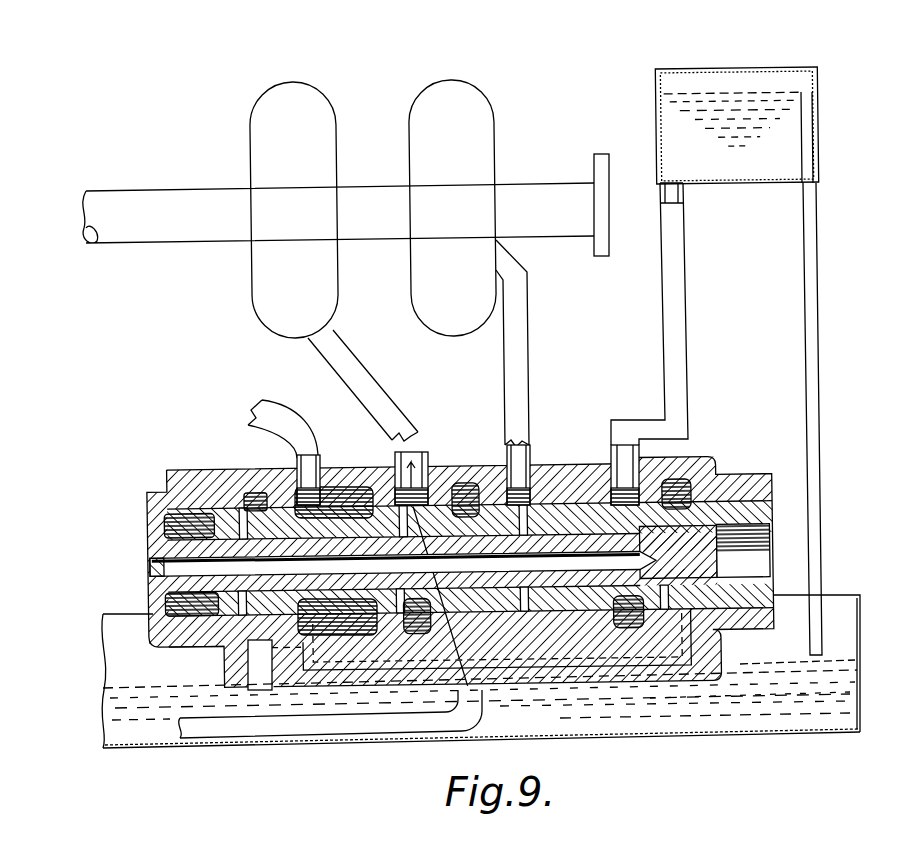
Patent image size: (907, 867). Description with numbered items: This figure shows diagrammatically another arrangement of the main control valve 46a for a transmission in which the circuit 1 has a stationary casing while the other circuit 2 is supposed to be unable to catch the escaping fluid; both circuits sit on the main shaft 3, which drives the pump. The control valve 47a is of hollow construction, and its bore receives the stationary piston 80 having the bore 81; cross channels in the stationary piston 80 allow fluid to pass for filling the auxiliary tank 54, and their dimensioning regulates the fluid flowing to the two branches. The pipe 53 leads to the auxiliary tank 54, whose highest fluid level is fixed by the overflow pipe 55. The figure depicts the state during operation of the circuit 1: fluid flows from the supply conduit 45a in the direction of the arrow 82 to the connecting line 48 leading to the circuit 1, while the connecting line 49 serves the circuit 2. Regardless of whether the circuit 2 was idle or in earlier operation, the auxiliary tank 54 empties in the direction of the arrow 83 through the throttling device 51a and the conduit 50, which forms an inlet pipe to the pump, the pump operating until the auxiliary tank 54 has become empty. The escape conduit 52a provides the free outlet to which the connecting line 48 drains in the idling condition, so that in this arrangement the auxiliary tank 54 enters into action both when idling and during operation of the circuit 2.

The circuit 1 is at (293, 209).
The circuit 2 is at (452, 207).
The main shaft 3 is at (181, 198).
The connecting line 48 is at (378, 374).
The connecting line 49 is at (530, 352).
The inlet pipe 50 is at (249, 411).
The pipe 53 is at (684, 340).
The auxiliary tank 54 is at (770, 178).
The overflow pipe 55 is at (818, 312).
The stationary piston 80 is at (718, 566).
The bore 81 is at (403, 563).
The arrow 82 is at (428, 447).
The arrow 83 is at (320, 453).
The main control valve 46a is at (572, 462).
The control valve 47a is at (334, 503).
The throttling device 51a is at (305, 633).
The escape conduit 52a is at (268, 690).
The supply conduit 45a is at (335, 725).